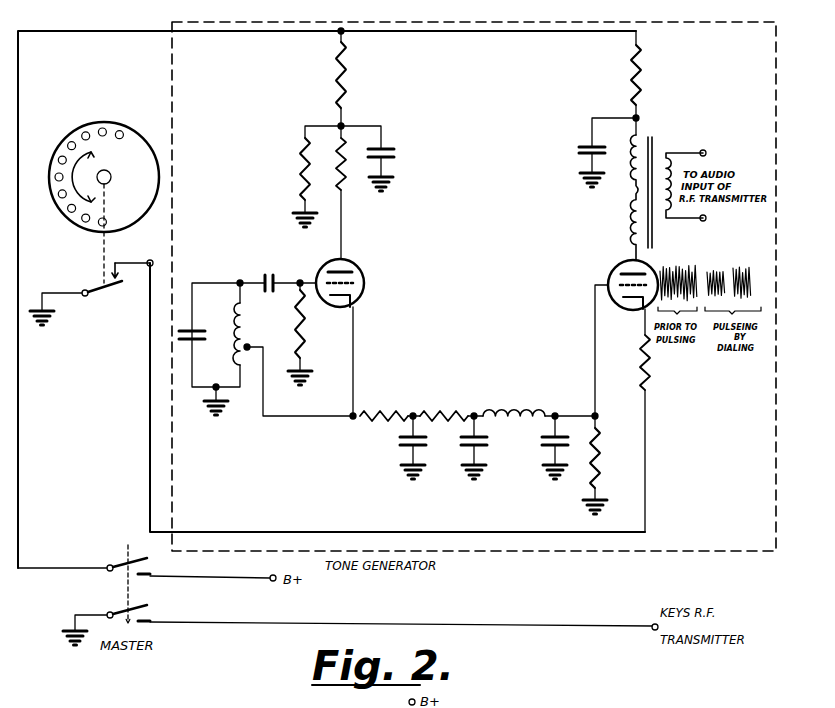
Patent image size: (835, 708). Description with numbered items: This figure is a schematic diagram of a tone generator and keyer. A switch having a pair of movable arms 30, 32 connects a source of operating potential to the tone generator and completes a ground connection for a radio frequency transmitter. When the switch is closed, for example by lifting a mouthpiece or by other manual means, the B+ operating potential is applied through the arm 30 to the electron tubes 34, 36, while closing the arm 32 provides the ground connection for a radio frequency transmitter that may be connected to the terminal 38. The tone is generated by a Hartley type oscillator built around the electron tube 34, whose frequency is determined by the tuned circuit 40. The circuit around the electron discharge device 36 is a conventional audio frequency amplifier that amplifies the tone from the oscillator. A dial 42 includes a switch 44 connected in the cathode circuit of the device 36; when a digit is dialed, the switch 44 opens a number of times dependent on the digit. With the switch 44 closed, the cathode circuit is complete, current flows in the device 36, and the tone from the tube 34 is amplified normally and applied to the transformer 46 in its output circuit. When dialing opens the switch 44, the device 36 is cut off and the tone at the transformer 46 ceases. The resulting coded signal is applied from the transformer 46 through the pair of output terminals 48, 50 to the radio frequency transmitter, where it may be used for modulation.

The movable arm 30 is at (124, 540).
The movable arm 32 is at (146, 606).
The electron tube 34 is at (360, 271).
The electron tube 36 is at (611, 274).
The terminal 38 is at (652, 626).
The tuned circuit 40 is at (215, 283).
The dial 42 is at (104, 122).
The switch 44 is at (104, 296).
The transformer 46 is at (679, 121).
The output terminal 48 is at (706, 152).
The output terminal 50 is at (706, 219).